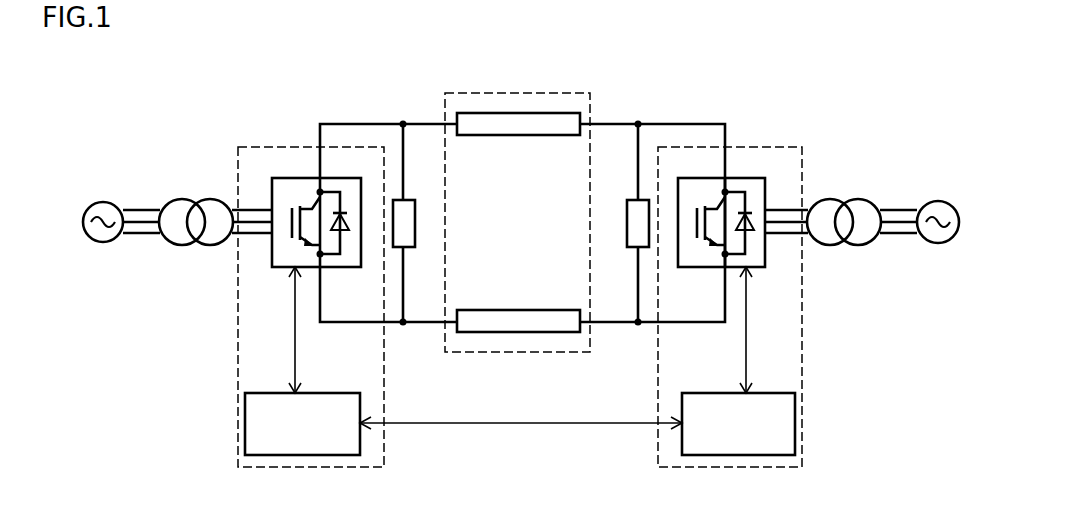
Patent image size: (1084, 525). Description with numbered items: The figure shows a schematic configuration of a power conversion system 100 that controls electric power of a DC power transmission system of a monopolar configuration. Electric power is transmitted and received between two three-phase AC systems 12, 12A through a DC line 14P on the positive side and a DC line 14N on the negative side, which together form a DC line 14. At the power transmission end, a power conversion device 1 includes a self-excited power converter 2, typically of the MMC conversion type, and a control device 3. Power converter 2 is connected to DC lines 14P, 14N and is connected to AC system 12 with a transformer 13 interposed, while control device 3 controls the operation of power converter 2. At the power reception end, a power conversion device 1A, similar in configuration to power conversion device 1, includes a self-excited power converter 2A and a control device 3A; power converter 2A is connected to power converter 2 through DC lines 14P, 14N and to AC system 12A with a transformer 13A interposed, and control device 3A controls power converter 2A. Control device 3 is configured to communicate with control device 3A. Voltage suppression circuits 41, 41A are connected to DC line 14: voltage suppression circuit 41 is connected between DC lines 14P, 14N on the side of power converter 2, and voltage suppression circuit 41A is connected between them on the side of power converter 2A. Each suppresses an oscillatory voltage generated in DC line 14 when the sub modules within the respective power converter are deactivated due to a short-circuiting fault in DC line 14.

The power conversion system 100 is at (877, 75).
The power conversion device 1 is at (248, 147).
The power conversion device 1A is at (780, 145).
The self-excited power converter 2 is at (300, 177).
The self-excited power converter 2A is at (735, 177).
The control device 3 is at (345, 391).
The control device 3A is at (687, 393).
The AC system 12 is at (108, 198).
The AC system 12A is at (938, 244).
The transformer 13 is at (185, 200).
The transformer 13A is at (858, 200).
The DC line 14 is at (572, 93).
The DC line on a positive side 14P is at (522, 135).
The DC line on a negative side 14N is at (522, 310).
The voltage suppression circuit 41 is at (412, 198).
The voltage suppression circuit 41A is at (636, 198).